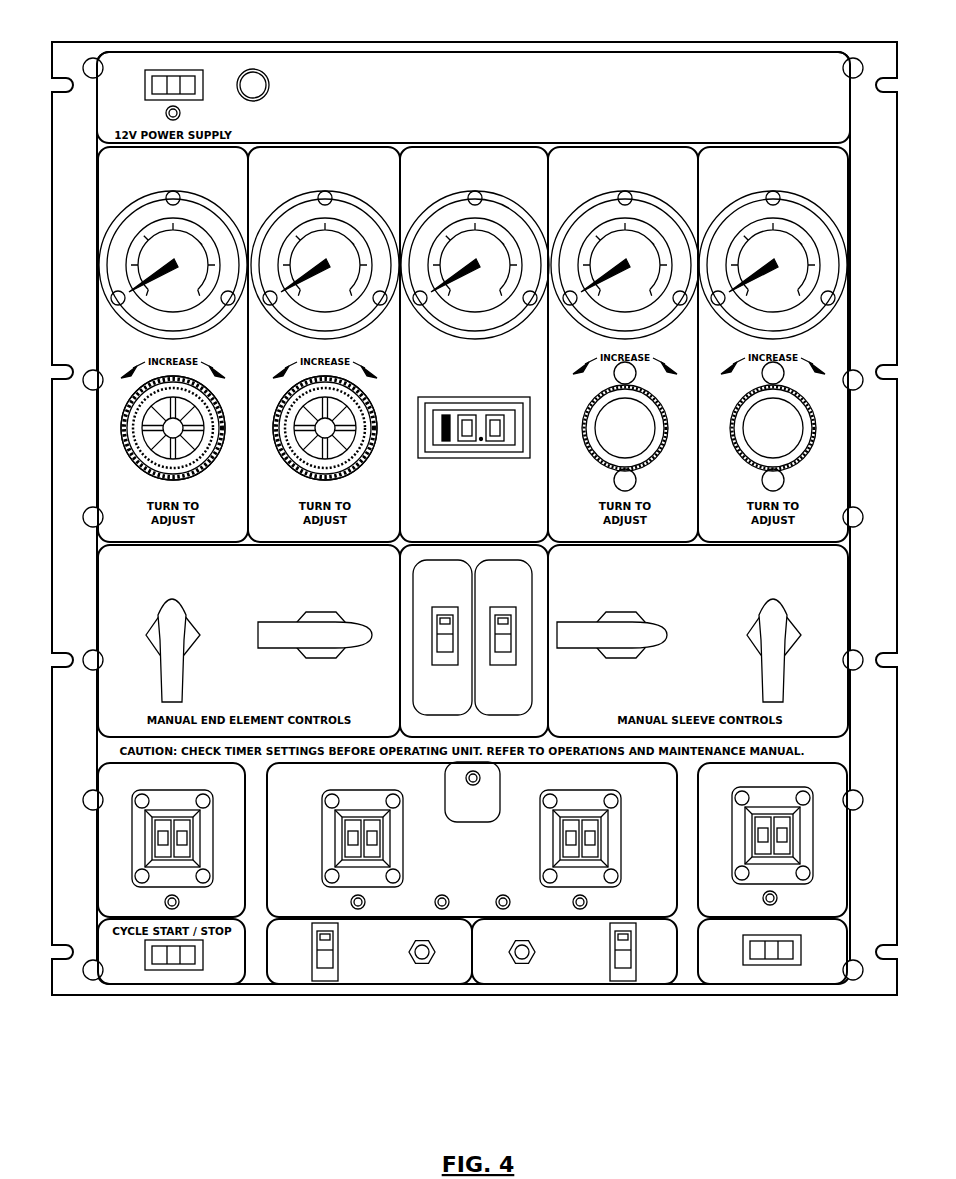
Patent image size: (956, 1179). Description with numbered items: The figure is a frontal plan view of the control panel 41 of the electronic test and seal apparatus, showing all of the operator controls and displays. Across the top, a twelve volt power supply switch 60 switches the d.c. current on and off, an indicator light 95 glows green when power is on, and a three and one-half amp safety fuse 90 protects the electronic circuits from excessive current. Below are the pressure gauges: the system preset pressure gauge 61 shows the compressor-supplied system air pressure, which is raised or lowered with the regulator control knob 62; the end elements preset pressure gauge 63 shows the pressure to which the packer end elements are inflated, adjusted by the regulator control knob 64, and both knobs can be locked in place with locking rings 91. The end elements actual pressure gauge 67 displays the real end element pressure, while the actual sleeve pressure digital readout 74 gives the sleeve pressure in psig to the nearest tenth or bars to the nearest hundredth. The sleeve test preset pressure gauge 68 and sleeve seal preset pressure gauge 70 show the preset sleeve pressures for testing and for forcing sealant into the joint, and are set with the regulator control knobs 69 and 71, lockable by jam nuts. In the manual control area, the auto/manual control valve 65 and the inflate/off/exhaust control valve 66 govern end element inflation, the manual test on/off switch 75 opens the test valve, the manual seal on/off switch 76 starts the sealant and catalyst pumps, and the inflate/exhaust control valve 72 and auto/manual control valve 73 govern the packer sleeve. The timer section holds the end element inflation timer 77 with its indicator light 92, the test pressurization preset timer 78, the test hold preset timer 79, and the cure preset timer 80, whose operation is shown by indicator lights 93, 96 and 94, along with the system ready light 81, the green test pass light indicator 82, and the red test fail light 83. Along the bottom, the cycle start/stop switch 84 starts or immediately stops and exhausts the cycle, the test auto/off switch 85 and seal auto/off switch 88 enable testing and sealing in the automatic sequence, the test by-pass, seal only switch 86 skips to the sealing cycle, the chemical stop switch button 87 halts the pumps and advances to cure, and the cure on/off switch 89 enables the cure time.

The control panel 41 is at (555, 68).
The 12 volt power supply switch 60 is at (165, 82).
The system preset pressure gauge 61 is at (122, 220).
The system preset regulator control knob 62 is at (150, 457).
The end elements preset pressure gauge 63 is at (368, 213).
The end element regulator control knob 64 is at (302, 460).
The auto/manual control valve 65 is at (175, 672).
The inflate/off/exhaust control valve 66 is at (300, 630).
The end elements actual pressure gauge 67 is at (516, 215).
The sleeve test preset pressure gauge 68 is at (668, 222).
The sleeve test regulator control knob 69 is at (607, 436).
The sleeve seal preset pressure gauge 70 is at (812, 218).
The sleeve seal regulator control knob 71 is at (757, 436).
The inflate/exhaust control valve 72 is at (640, 630).
The auto/manual control valve 73 is at (777, 658).
The actual sleeve pressure digital readout 74 is at (462, 402).
The manual test on/off switch 75 is at (440, 628).
The manual seal on/off switch 76 is at (508, 628).
The end element inflation timer 77 is at (140, 838).
The test pressurization preset timer 78 is at (340, 838).
The test hold preset timer 79 is at (558, 835).
The cure preset timer 80 is at (800, 837).
The system ready light 81 is at (482, 776).
The test pass light indicator 82 is at (434, 902).
The test fail light 83 is at (511, 902).
The cycle start/stop switch 84 is at (164, 960).
The test auto/off switch 85 is at (326, 970).
The test by-pass, seal only switch 86 is at (433, 954).
The chemical stop switch button 87 is at (521, 965).
The seal auto/off switch 88 is at (624, 960).
The cure on/off switch 89 is at (765, 955).
The safety fuse 90 is at (258, 85).
The locking rings 91 is at (208, 462).
The indicator light 92 is at (180, 902).
The indicator light 93 is at (350, 902).
The indicator light 94 is at (778, 898).
The indicator light 95 is at (181, 113).
The indicator light 96 is at (589, 902).